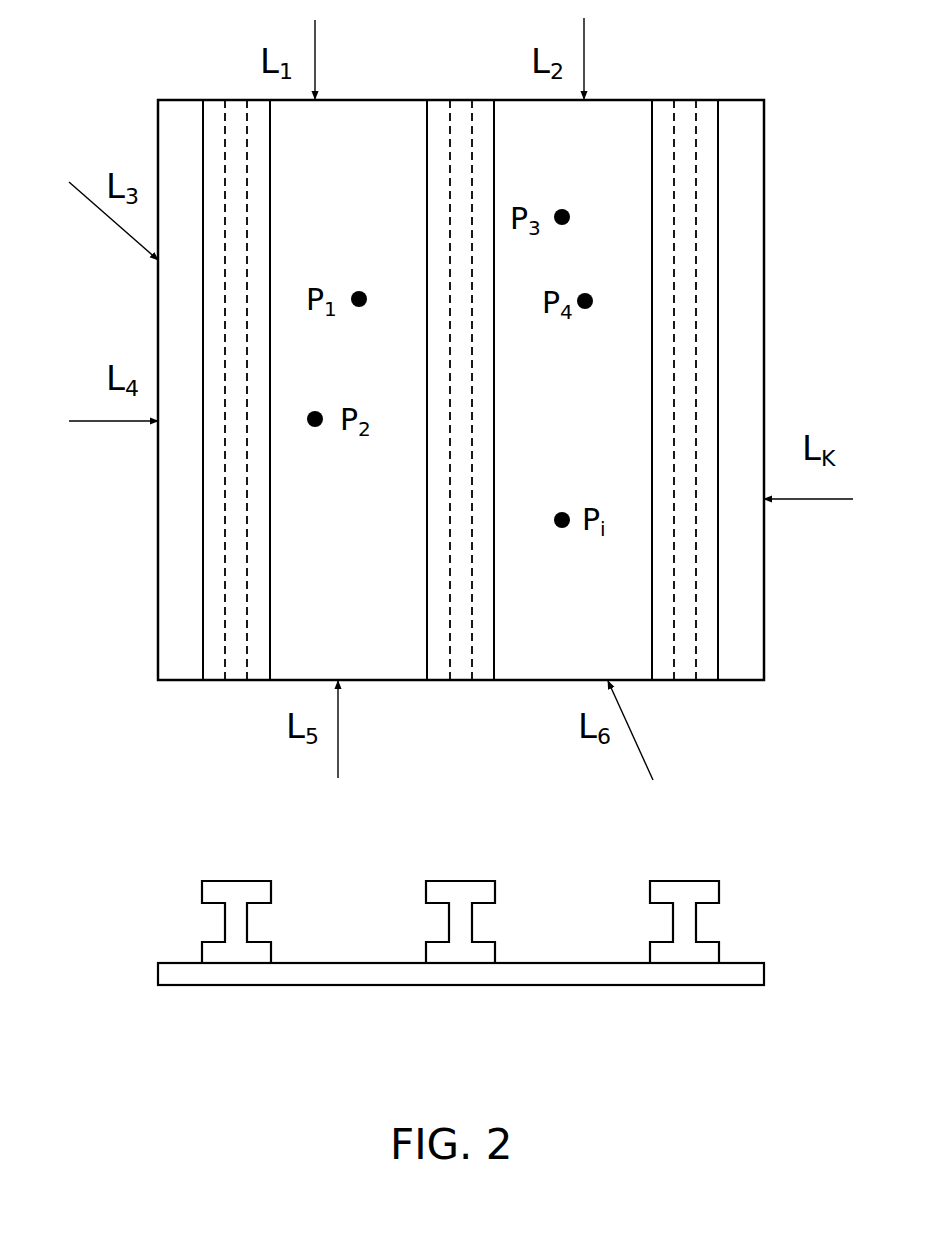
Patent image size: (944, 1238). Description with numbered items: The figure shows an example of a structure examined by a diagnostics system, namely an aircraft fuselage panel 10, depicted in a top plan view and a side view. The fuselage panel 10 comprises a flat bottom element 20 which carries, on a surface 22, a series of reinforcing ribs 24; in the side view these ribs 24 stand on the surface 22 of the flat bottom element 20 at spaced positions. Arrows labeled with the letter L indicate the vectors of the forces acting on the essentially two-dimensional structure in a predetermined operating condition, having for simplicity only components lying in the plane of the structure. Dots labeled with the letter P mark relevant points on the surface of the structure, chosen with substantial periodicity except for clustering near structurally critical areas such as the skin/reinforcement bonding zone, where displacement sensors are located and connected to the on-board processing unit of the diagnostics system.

The fuselage panel 10 is at (783, 147).
The flat bottom element 20 is at (157, 638).
The surface 22 is at (327, 968).
The reinforcing ribs 24 is at (228, 882).